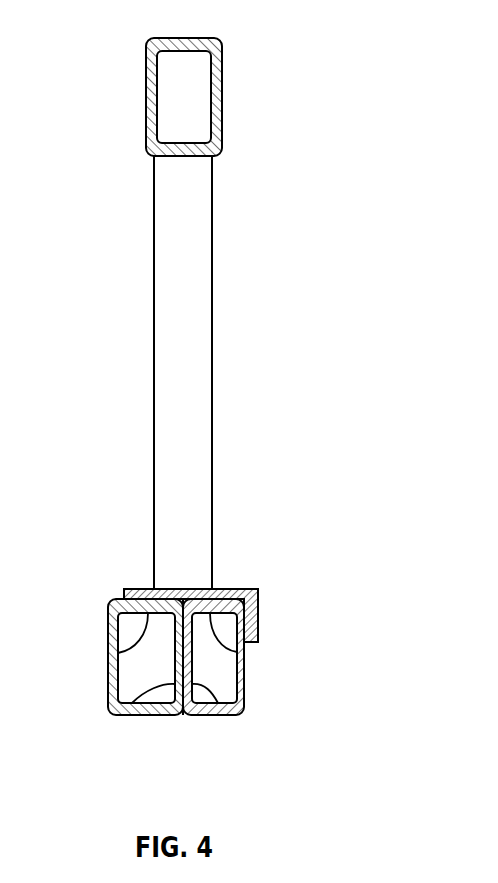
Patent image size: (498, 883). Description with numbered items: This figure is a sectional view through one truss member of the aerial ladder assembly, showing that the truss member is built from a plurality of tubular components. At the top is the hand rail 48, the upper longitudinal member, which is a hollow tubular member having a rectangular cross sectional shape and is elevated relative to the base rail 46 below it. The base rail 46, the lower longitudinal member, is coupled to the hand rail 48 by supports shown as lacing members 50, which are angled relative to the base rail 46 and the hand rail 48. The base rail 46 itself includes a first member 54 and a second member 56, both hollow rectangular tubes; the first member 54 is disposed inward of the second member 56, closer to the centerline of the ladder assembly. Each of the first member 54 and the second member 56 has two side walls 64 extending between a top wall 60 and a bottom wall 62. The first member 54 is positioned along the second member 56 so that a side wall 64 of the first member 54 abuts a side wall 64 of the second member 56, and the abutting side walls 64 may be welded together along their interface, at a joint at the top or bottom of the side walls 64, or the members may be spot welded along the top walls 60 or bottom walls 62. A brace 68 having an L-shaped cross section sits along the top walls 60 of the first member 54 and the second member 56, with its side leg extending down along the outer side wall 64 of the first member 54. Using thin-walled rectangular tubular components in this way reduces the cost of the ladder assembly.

The base rail 46 is at (210, 672).
The hand rail 48 is at (220, 99).
The lacing member 50 is at (202, 268).
The first member 54 is at (240, 747).
The second member 56 is at (106, 747).
The top wall 60 is at (108, 659).
The bottom wall 62 is at (205, 717).
The side wall 64 is at (108, 680).
The brace 68 is at (233, 588).